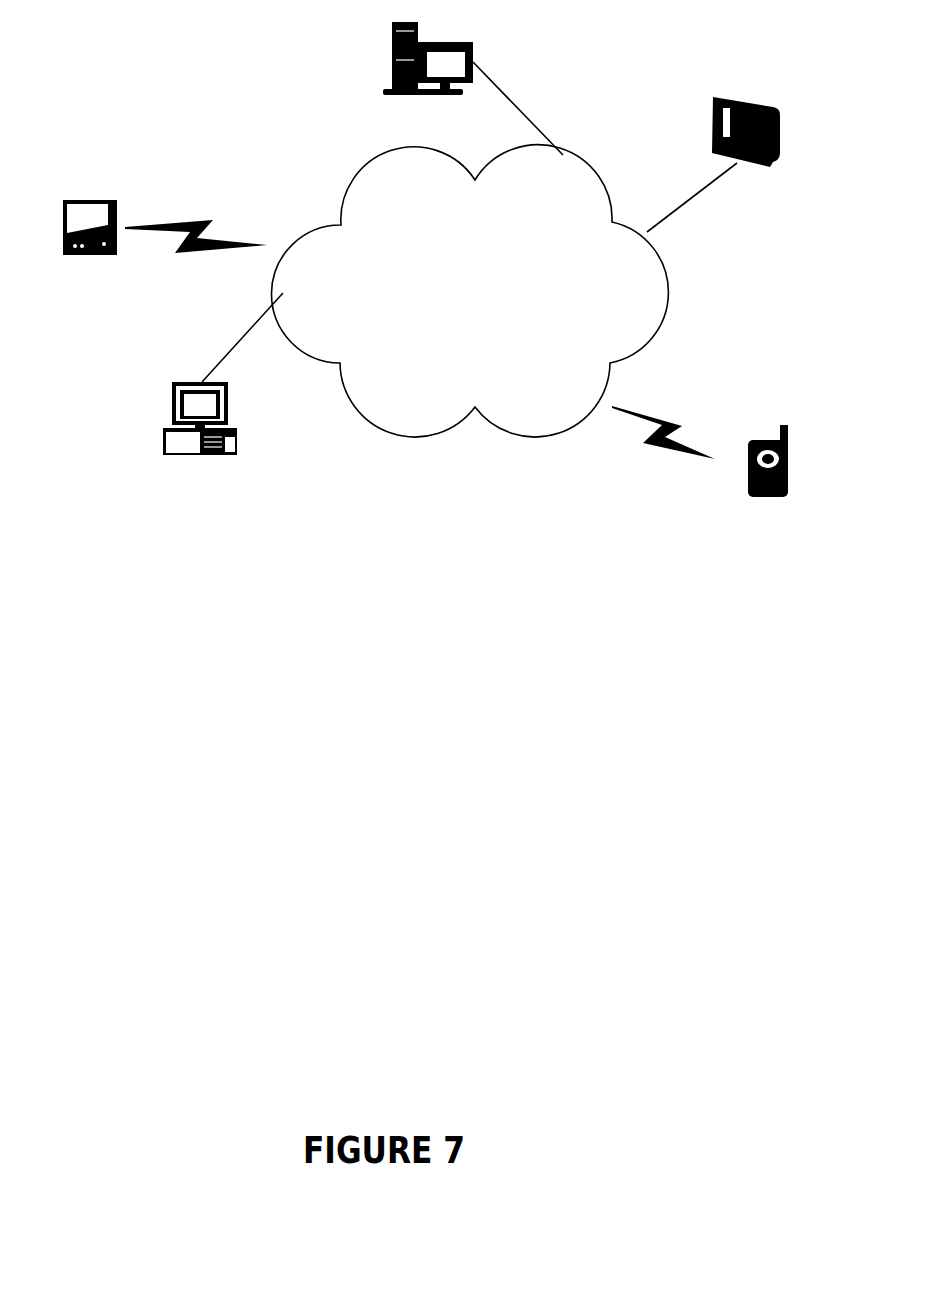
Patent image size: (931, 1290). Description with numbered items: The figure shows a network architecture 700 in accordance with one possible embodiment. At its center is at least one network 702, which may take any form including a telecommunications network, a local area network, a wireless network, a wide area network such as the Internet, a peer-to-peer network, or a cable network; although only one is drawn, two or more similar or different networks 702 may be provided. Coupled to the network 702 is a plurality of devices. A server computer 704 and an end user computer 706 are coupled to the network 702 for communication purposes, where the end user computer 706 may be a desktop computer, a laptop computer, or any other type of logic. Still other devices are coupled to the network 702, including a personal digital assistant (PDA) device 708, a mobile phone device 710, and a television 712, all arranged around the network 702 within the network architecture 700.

The network architecture 700 is at (385, 727).
The network 702 is at (532, 437).
The server computer 704 is at (392, 60).
The end user computer 706 is at (163, 435).
The personal digital assistant (PDA) device 708 is at (90, 200).
The mobile phone device 710 is at (747, 442).
The television 712 is at (723, 92).